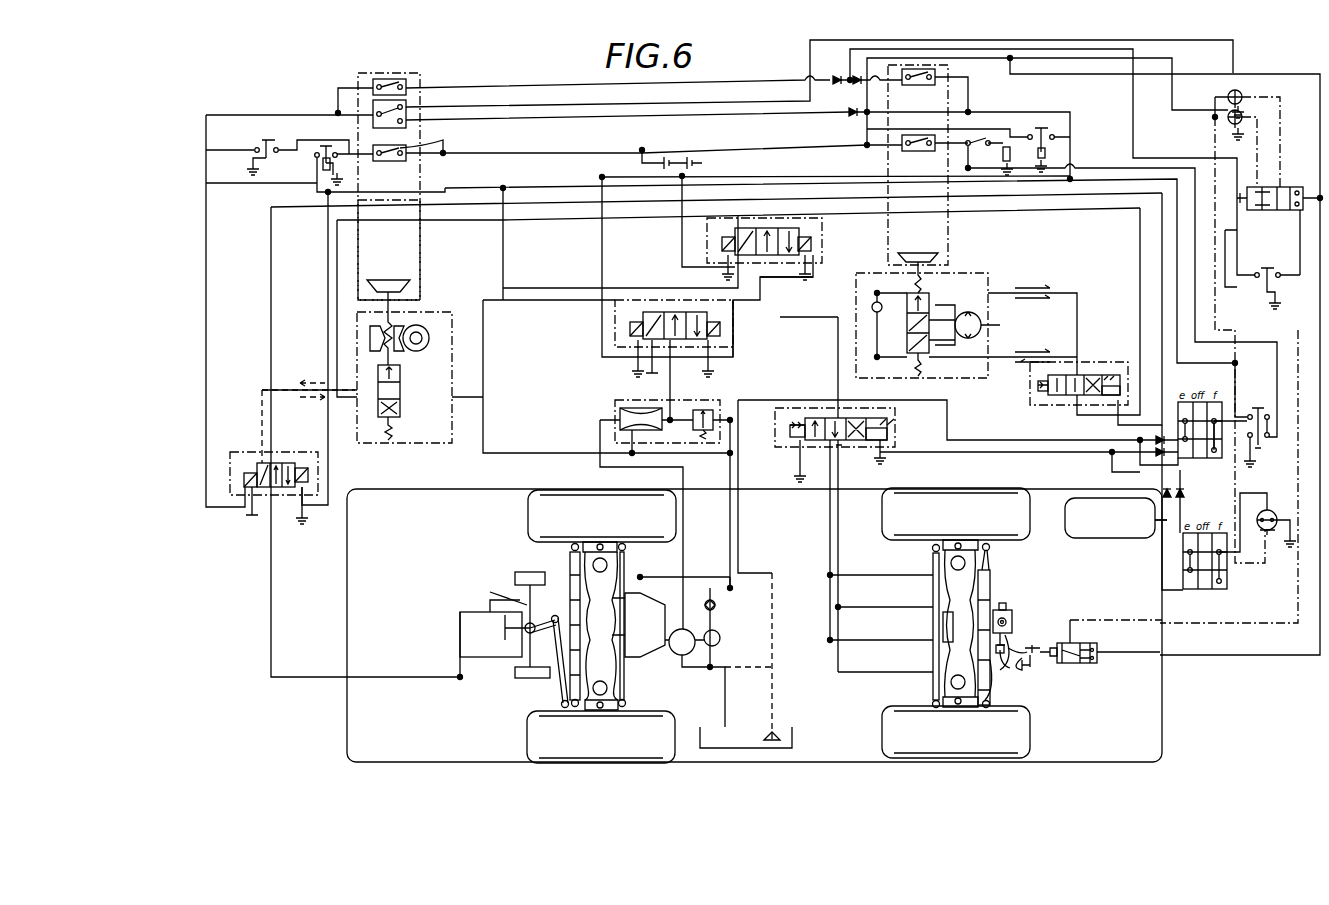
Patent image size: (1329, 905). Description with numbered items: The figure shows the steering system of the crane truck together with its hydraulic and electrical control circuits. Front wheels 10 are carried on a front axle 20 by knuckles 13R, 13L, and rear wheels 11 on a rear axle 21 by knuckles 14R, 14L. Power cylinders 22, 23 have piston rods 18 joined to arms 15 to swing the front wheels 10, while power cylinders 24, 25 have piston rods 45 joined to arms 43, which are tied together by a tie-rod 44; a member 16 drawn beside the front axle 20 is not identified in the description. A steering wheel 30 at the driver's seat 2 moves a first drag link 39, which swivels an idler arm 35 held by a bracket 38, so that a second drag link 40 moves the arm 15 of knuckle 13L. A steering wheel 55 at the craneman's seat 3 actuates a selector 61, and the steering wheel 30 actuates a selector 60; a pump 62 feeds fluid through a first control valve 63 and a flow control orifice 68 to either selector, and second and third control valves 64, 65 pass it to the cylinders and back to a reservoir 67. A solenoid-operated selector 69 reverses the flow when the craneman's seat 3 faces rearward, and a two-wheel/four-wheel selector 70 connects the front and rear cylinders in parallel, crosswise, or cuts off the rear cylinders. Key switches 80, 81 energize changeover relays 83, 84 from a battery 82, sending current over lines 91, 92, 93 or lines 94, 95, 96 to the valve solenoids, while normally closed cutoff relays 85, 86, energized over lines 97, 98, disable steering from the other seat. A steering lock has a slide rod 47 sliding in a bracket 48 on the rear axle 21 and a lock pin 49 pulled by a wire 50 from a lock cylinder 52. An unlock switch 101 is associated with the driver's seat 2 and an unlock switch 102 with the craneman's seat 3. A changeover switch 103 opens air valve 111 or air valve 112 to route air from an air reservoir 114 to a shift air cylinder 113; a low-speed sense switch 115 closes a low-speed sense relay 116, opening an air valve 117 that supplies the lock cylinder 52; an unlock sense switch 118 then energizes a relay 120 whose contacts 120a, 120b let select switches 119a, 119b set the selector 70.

The driver's seat 2 is at (420, 253).
The craneman's seat 3 is at (948, 236).
The front wheels 10 is at (566, 500).
The rear wheels 11 is at (1012, 500).
The knuckle 13R is at (600, 542).
The knuckle 13L is at (605, 710).
The knuckle 14R is at (963, 540).
The knuckle 14L is at (966, 707).
The arms 15 is at (592, 710).
The drive shaft 16 is at (624, 685).
The piston rods 18 is at (580, 565).
The front axle 20 is at (600, 600).
The rear axle 21 is at (948, 622).
The power cylinder 22 is at (573, 588).
The power cylinder 23 is at (578, 705).
The power cylinder 24 is at (990, 582).
The power cylinder 25 is at (993, 675).
The steering wheel 30 is at (392, 280).
The idler arm 35 is at (540, 635).
The bracket 38 is at (522, 650).
The first drag link 39 is at (496, 594).
The second drag link 40 is at (558, 690).
The arms 43 is at (978, 707).
The tie-rod 44 is at (933, 650).
The piston rods 45 is at (988, 560).
The slide rod 47 is at (1003, 660).
The bracket 48 is at (1012, 613).
The lock pin 49 is at (1012, 622).
The wire 50 is at (1040, 650).
The lock cylinder 52 is at (1035, 660).
The steering wheel 55 is at (918, 253).
The directional control valve (selector) 60 is at (432, 312).
The selector 61 is at (982, 273).
The pump 62 is at (678, 654).
The first control valve 63 is at (680, 300).
The second control valve 64 is at (252, 452).
The third control valve 65 is at (822, 245).
The reservoir 67 is at (735, 748).
The flow control orifice 68 is at (615, 400).
The solenoid-operated selector 69 is at (1093, 362).
The two-wheel/four-wheel selector 70 is at (895, 436).
The key switch 80 is at (418, 150).
The key switch 81 is at (912, 155).
The battery 82 is at (664, 160).
The changeover relay 83 is at (266, 140).
The changeover relay 84 is at (1041, 128).
The cutoff relay 85 is at (326, 146).
The cutoff relay 86 is at (992, 158).
The line 91 is at (602, 255).
The line 92 is at (206, 303).
The line 93 is at (682, 237).
The line 94 is at (733, 333).
The line 95 is at (328, 283).
The line 96 is at (813, 277).
The line 97 is at (445, 188).
The line 98 is at (808, 176).
The unlock (four-wheel selector) switch 101 is at (410, 73).
The switch unit 102 is at (922, 69).
The high-speed/low-speed changeover switch 103 is at (376, 86).
The air valve 111 is at (1242, 92).
The air valve 112 is at (1257, 110).
The shift air cylinder 113 is at (1255, 187).
The air reservoir 114 is at (1090, 538).
The low-speed sense switch 115 is at (1293, 187).
The low-speed sense relay 116 is at (1264, 268).
The air valve 117 is at (1258, 510).
The unlock sense switch 118 is at (1090, 663).
The select switch 119a is at (1215, 589).
The select switch 119b is at (1178, 425).
The relay 120 is at (1258, 408).
The relay contact 120a is at (1247, 437).
The relay contact 120b is at (1226, 455).